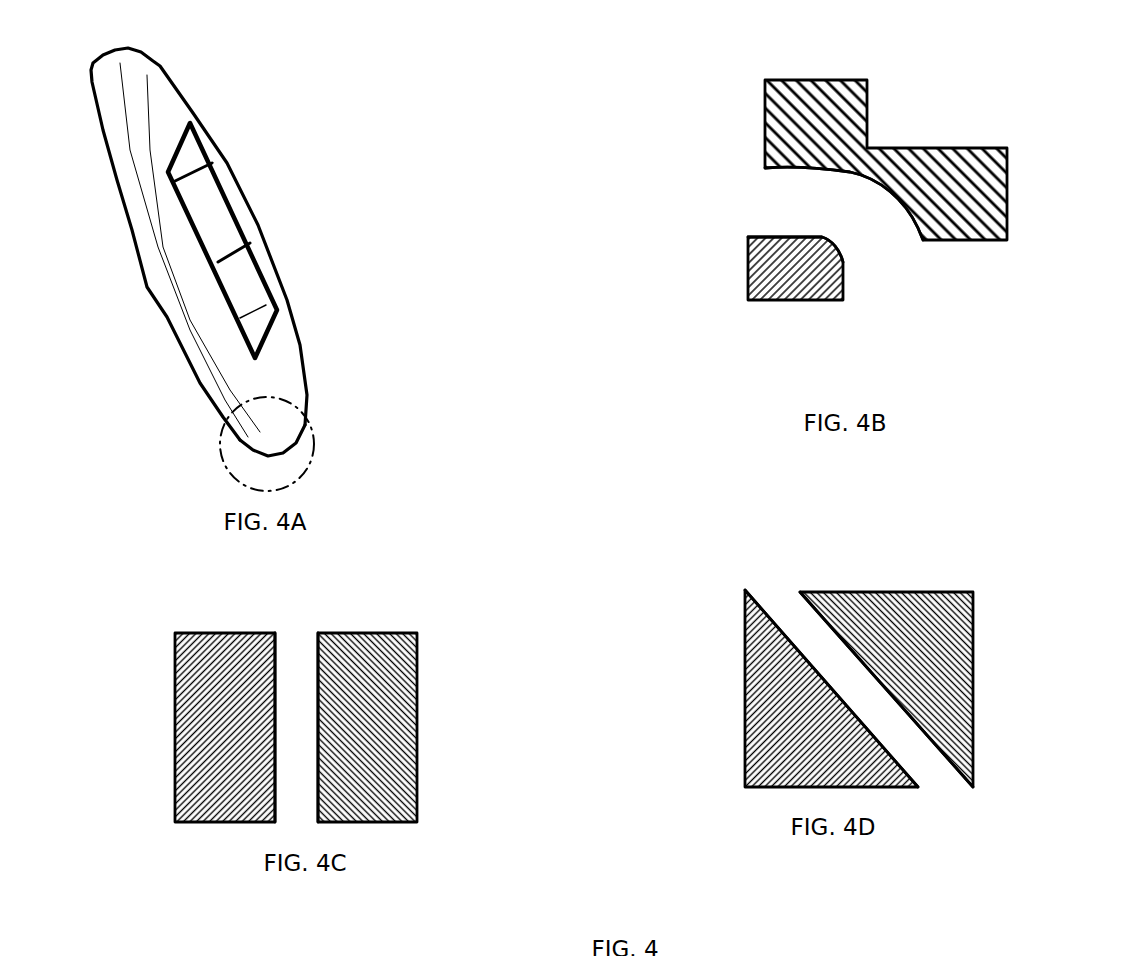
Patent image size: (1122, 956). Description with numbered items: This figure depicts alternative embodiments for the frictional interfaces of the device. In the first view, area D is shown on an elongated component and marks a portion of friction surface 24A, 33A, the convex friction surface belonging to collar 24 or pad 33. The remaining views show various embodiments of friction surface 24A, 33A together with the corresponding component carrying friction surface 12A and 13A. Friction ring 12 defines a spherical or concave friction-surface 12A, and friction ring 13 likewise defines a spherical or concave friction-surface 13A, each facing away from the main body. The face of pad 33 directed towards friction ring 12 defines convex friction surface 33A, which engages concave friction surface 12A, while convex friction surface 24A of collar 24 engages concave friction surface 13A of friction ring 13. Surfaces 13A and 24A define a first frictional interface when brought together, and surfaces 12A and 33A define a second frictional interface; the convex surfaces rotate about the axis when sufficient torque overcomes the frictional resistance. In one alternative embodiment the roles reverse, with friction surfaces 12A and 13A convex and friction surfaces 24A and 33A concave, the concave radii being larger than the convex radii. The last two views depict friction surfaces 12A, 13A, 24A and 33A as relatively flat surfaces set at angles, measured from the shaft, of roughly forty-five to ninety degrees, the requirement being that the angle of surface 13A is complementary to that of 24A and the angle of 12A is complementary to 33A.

In FIG. 4B, the friction ring 12 is at (932, 157).
In FIG. 4C, the friction ring 12 is at (420, 727).
In FIG. 4D, the friction ring 12 is at (943, 689).
In FIG. 4B, the friction ring 13 is at (930, 148).
In FIG. 4C, the friction ring 13 is at (417, 782).
In FIG. 4D, the friction ring 13 is at (973, 707).
In FIG. 4B, the friction-surface 12A is at (761, 141).
In FIG. 4C, the friction-surface 12A is at (396, 702).
In FIG. 4D, the friction-surface 12A is at (887, 659).
In FIG. 4B, the friction-surface 13A is at (765, 168).
In FIG. 4C, the friction-surface 13A is at (318, 697).
In FIG. 4D, the friction-surface 13A is at (823, 617).
In FIG. 4B, the collar 24 is at (724, 240).
In FIG. 4C, the collar 24 is at (172, 727).
In FIG. 4D, the collar 24 is at (764, 688).
In FIG. 4B, the pad 33 is at (748, 265).
In FIG. 4C, the pad 33 is at (177, 785).
In FIG. 4D, the pad 33 is at (745, 760).
In FIG. 4A, the friction surface 24A is at (300, 430).
In FIG. 4B, the friction surface 24A is at (870, 284).
In FIG. 4C, the friction surface 24A is at (192, 702).
In FIG. 4D, the friction surface 24A is at (760, 662).
In FIG. 4A, the friction surface 33A is at (364, 411).
In FIG. 4B, the friction surface 33A is at (825, 240).
In FIG. 4C, the friction surface 33A is at (275, 660).
In FIG. 4D, the friction surface 33A is at (767, 610).
In FIG. 4A, the area D is at (227, 464).